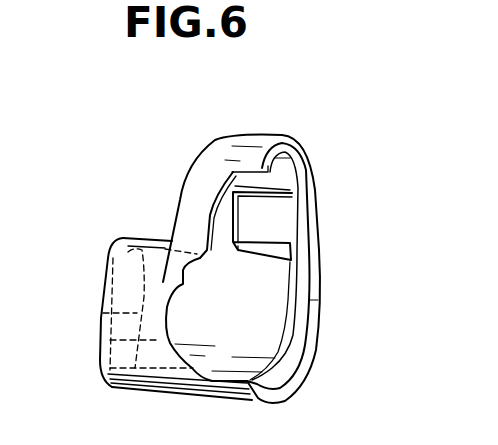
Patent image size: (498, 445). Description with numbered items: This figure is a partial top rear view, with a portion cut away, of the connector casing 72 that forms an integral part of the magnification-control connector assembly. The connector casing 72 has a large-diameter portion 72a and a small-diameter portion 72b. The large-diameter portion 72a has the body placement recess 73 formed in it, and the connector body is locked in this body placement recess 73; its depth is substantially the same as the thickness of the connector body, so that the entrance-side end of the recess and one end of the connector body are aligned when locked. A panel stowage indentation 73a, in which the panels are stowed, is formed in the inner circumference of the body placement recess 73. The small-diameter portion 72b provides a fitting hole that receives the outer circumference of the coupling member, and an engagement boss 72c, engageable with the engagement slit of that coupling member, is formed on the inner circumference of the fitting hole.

The connector casing 72 is at (234, 168).
The large-diameter portion 72a is at (175, 164).
The small-diameter portion 72b is at (136, 232).
The engagement boss 72c is at (173, 303).
The body placement recess 73 is at (300, 353).
The panel stowage indentation 73a is at (277, 216).